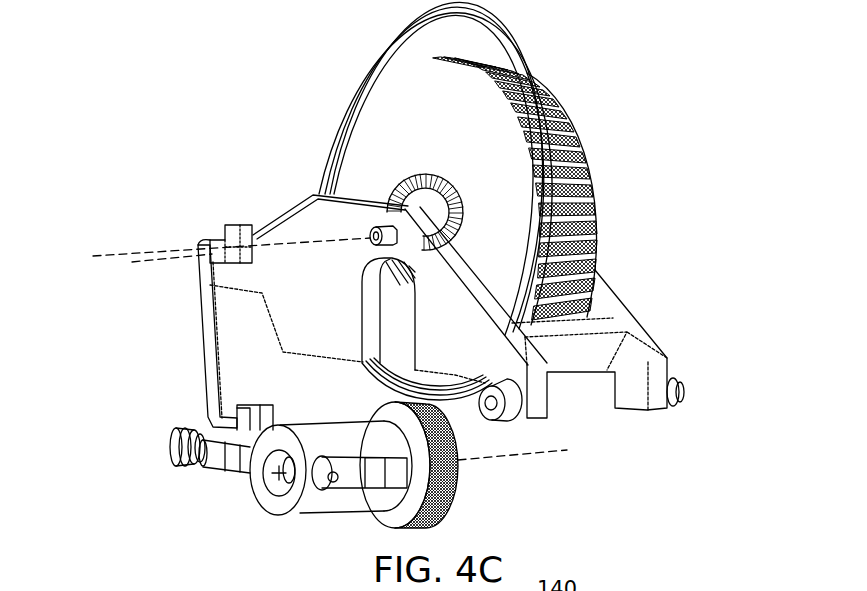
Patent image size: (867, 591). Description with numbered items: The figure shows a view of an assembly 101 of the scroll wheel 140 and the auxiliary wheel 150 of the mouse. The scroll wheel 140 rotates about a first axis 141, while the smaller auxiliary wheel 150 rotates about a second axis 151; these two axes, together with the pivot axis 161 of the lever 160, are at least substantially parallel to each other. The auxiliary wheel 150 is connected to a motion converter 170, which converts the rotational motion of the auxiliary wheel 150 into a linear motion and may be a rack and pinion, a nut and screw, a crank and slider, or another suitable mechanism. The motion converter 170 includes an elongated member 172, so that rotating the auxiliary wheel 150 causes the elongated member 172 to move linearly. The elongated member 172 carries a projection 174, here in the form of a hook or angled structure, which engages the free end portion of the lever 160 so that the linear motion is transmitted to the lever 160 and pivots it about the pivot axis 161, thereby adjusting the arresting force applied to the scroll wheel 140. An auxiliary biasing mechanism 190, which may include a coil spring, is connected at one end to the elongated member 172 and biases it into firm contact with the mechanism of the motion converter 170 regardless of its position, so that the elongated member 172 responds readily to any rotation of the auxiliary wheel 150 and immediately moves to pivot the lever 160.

The assembly 101 is at (733, 107).
The scroll wheel 140 is at (532, 80).
The first axis 141 is at (312, 245).
The auxiliary wheel 150 is at (450, 493).
The second axis 151 is at (547, 452).
The lever 160 is at (200, 305).
The pivot axis 161 is at (158, 252).
The motion converter 170 is at (278, 500).
The elongated member 172 is at (218, 460).
The projection 174 is at (267, 418).
The auxiliary biasing mechanism 190 is at (165, 450).